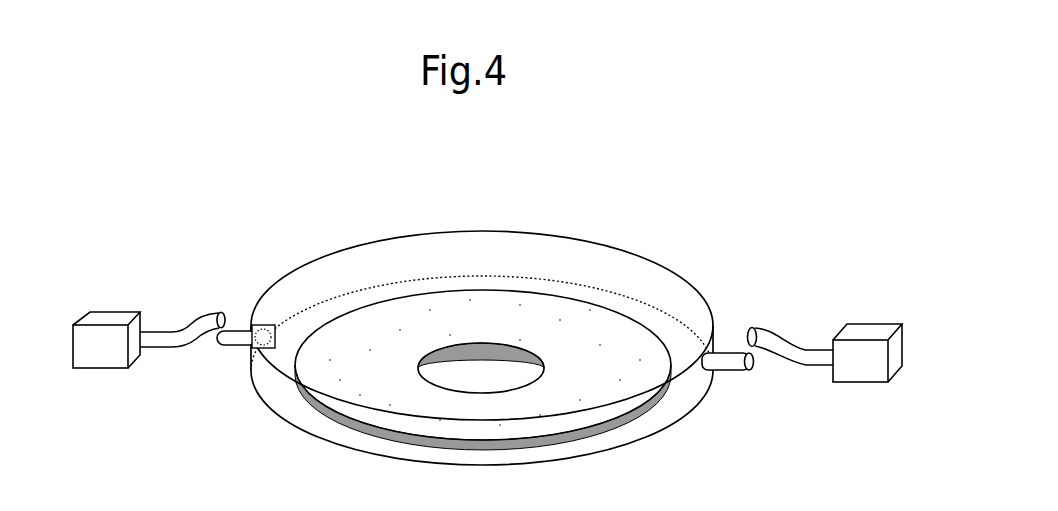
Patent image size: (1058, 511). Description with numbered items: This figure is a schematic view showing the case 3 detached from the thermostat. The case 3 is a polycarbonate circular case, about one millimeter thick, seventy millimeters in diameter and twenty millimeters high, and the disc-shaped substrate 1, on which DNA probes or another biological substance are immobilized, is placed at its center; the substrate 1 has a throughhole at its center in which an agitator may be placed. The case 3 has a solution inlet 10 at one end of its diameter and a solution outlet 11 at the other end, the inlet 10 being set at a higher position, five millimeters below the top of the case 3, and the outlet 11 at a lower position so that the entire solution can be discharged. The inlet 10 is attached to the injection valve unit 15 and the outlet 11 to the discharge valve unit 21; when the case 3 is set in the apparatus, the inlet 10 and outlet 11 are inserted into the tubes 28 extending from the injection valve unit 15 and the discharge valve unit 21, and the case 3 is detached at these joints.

The disc-shaped substrate 1 is at (355, 327).
The case 3 is at (555, 237).
The solution inlet 10 is at (727, 353).
The solution outlet 11 is at (240, 325).
The injection valve unit 15 is at (863, 370).
The discharge valve unit 21 is at (117, 363).
The tubes 28 is at (163, 337).